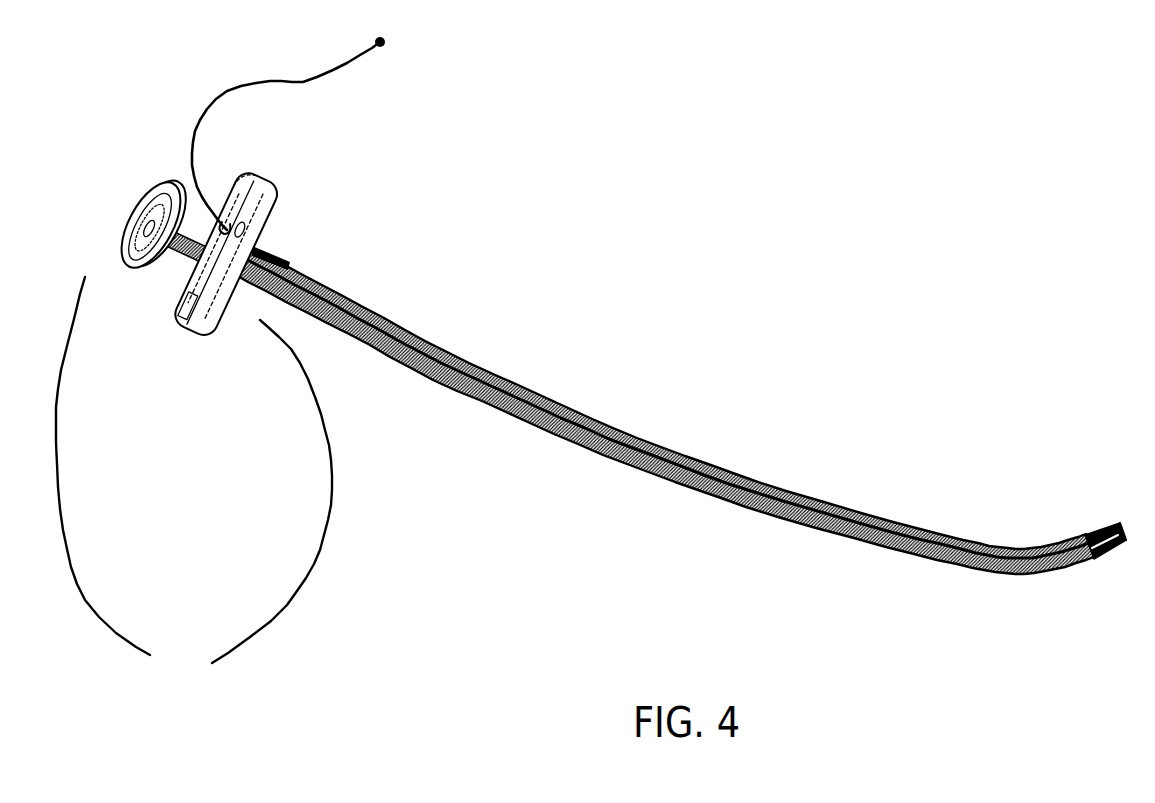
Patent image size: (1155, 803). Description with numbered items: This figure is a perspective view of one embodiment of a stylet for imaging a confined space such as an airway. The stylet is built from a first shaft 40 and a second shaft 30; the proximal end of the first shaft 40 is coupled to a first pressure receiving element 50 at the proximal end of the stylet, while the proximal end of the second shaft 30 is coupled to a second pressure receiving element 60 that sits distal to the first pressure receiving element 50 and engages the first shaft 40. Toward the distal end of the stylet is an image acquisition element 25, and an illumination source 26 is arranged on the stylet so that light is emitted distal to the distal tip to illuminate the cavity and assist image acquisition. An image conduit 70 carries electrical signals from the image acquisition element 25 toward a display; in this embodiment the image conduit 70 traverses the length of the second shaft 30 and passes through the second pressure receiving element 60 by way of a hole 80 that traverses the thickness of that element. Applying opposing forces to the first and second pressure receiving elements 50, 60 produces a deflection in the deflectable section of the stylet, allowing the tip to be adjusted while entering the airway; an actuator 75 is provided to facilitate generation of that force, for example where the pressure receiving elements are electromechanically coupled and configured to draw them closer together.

The image acquisition element 25 is at (1068, 422).
The illumination source 26 is at (1124, 527).
The second shaft 30 is at (665, 409).
The first shaft 40 is at (628, 404).
The first pressure receiving element 50 is at (154, 311).
The second pressure receiving element 60 is at (227, 337).
The image conduit 70 is at (379, 133).
The actuator 75 is at (194, 495).
The hole 80 is at (342, 244).